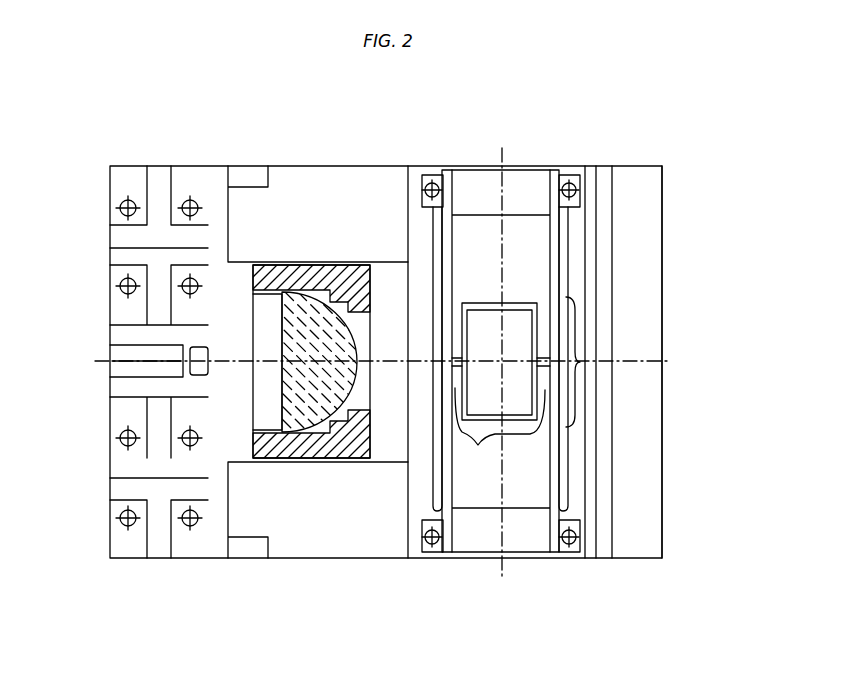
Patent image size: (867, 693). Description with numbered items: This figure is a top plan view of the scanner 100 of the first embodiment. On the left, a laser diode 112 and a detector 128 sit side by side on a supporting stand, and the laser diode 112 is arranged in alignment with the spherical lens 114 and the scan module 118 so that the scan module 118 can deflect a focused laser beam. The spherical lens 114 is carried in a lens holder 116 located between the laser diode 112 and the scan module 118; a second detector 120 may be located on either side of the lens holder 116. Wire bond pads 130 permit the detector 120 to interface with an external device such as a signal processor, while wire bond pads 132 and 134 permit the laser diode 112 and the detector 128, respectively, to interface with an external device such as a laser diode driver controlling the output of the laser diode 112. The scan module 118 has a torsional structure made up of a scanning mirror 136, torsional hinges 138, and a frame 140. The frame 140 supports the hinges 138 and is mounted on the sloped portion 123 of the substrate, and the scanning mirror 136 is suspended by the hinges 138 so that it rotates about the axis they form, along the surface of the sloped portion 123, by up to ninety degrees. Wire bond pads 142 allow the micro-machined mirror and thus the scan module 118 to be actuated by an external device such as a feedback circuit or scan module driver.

The scanner 100 is at (342, 118).
The laser diode 112 is at (197, 347).
The spherical lens 114 is at (290, 348).
The lens holder 116 is at (253, 292).
The scan module 118 is at (611, 350).
The detector 120 is at (298, 172).
The sloped portion 123 is at (432, 598).
The detector 128 is at (122, 371).
The wire bond pads 130 is at (246, 171).
The wire bond pads 132 is at (173, 267).
The wire bond pads 134 is at (173, 402).
The scanning mirror 136 is at (517, 322).
The torsional hinges 138 is at (516, 387).
The frame 140 is at (556, 247).
The wire bond pads 142 is at (438, 170).